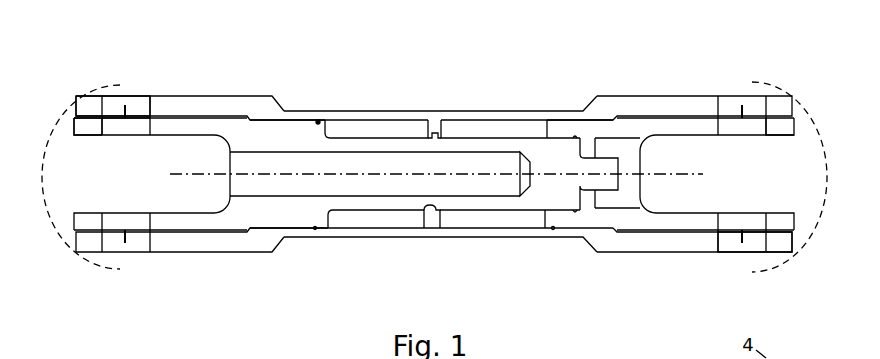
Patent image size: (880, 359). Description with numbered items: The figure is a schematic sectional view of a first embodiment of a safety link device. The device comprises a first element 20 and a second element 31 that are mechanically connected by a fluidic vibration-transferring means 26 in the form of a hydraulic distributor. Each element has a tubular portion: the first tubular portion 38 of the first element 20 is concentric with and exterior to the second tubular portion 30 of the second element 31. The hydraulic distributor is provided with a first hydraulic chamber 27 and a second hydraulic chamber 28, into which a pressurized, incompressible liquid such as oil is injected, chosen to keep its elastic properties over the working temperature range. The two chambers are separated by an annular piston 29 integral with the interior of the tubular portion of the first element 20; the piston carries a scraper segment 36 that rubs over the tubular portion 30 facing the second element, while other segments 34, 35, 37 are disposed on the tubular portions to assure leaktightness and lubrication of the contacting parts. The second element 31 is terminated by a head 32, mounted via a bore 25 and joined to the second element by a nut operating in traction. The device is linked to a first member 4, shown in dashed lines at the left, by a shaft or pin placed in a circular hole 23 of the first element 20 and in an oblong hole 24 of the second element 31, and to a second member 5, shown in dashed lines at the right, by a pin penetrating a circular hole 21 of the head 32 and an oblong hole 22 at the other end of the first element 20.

The first member 4 is at (98, 75).
The second member 5 is at (771, 72).
The first element 20 is at (208, 247).
The circular hole 21 is at (753, 222).
The oblong hole 22 is at (752, 247).
The circular hole 23 is at (142, 100).
The oblong hole 24 is at (102, 128).
The bore 25 is at (620, 174).
The fluidic vibration-transferring means 26 is at (388, 251).
The first hydraulic chamber 27 is at (421, 130).
The second hydraulic chamber 28 is at (470, 130).
The annular piston 29 is at (446, 228).
The second tubular portion 30 is at (378, 131).
The second element 31 is at (80, 135).
The head of second element 32 is at (785, 128).
The segment 34 is at (316, 120).
The segment 35 is at (566, 120).
The scraper segment 36 is at (425, 213).
The segment 37 is at (566, 212).
The first tubular portion 38 is at (395, 115).